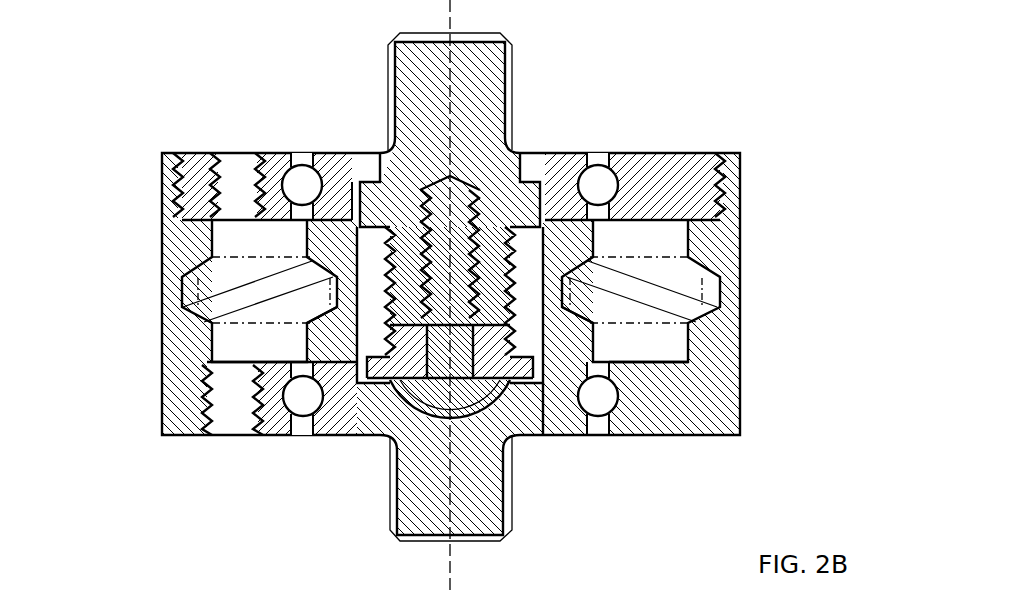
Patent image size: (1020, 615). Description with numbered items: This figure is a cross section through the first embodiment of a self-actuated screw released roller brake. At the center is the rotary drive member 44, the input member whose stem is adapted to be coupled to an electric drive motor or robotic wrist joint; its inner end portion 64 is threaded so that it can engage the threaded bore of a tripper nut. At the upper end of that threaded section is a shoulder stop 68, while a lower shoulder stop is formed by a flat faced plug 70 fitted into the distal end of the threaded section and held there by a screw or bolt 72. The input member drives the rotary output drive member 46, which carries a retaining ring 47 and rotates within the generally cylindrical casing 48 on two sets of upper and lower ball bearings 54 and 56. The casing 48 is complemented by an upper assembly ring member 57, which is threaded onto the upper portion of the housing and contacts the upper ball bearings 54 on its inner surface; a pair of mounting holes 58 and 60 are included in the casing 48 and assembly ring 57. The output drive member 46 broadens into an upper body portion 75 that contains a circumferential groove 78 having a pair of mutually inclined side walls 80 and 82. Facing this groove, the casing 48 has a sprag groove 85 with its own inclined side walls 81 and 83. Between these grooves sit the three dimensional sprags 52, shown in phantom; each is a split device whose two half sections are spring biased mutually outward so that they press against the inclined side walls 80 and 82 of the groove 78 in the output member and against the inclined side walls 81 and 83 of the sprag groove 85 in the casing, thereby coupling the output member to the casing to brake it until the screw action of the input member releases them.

The rotary drive member 44 is at (497, 72).
The rotary output drive member 46 is at (483, 527).
The retaining ring 47 is at (368, 157).
The casing 48 is at (737, 198).
The three dimensional sprags 52 is at (183, 258).
The upper ball bearings 54 is at (295, 182).
The lower ball bearings 56 is at (298, 397).
The upper assembly ring member 57 is at (660, 158).
The mounting hole 58 is at (233, 410).
The mounting hole 60 is at (238, 173).
The inner end portion 64 is at (523, 243).
The shoulder stop 68 is at (360, 187).
The flat faced plug 70 is at (525, 345).
The screw or bolt 72 is at (428, 403).
The upper body portion 75 is at (333, 277).
The circumferential groove 78 is at (572, 292).
The inclined side wall 80 is at (215, 288).
The inclined side wall 81 is at (565, 295).
The inclined side wall 82 is at (313, 310).
The inclined side wall 83 is at (665, 357).
The sprag groove 85 is at (188, 280).